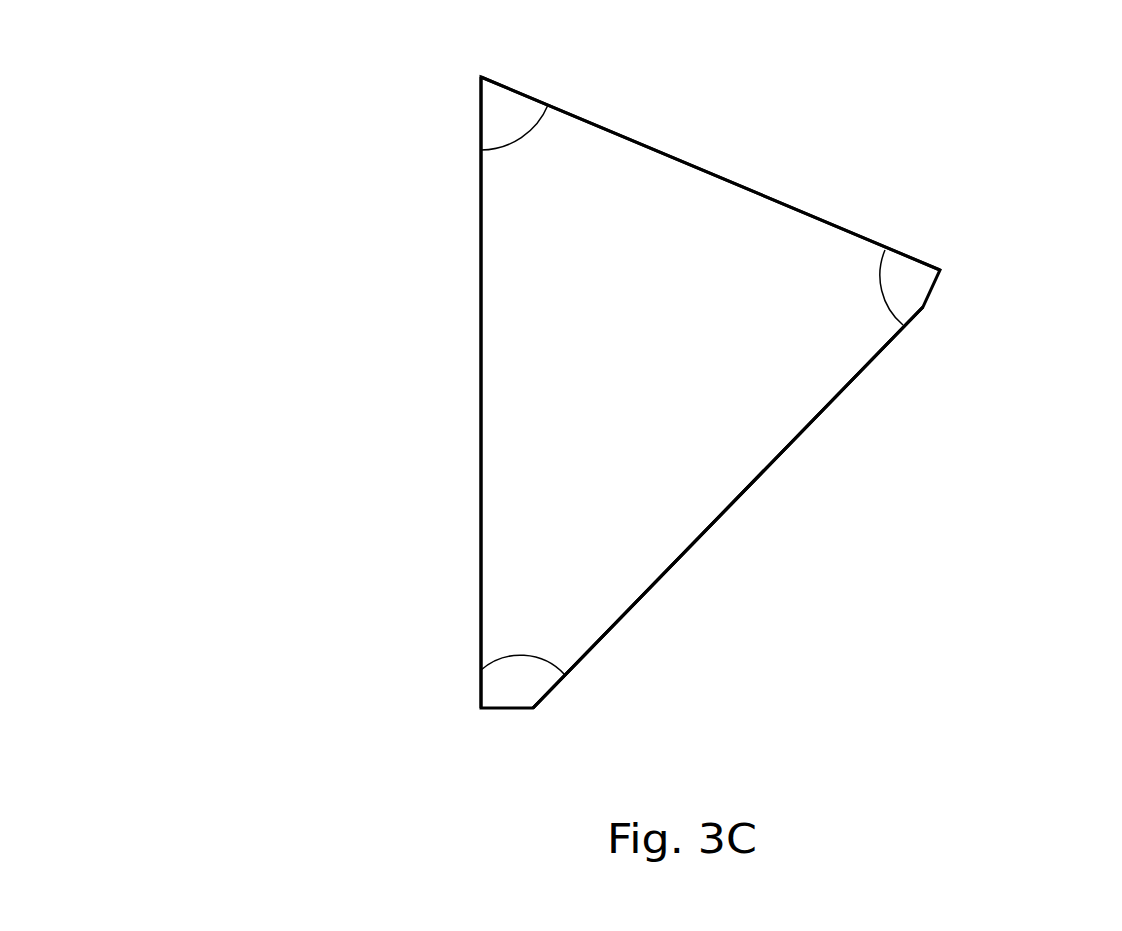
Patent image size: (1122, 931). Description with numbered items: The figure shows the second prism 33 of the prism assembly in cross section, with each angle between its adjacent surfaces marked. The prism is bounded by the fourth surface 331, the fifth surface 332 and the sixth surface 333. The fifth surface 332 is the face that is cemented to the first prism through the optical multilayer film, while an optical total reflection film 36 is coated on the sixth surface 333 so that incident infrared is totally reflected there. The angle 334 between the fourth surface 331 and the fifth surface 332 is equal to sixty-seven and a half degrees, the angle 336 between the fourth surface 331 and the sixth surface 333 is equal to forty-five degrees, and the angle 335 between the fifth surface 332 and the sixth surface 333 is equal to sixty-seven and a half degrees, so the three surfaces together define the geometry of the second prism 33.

The second prism 33 is at (150, 50).
The fourth surface 331 is at (482, 313).
The fifth surface 332 is at (847, 230).
The sixth surface 333 is at (772, 462).
The angle 334 is at (525, 140).
The angle 335 is at (882, 298).
The angle 336 is at (520, 655).
The optical total reflection film 36 is at (657, 583).